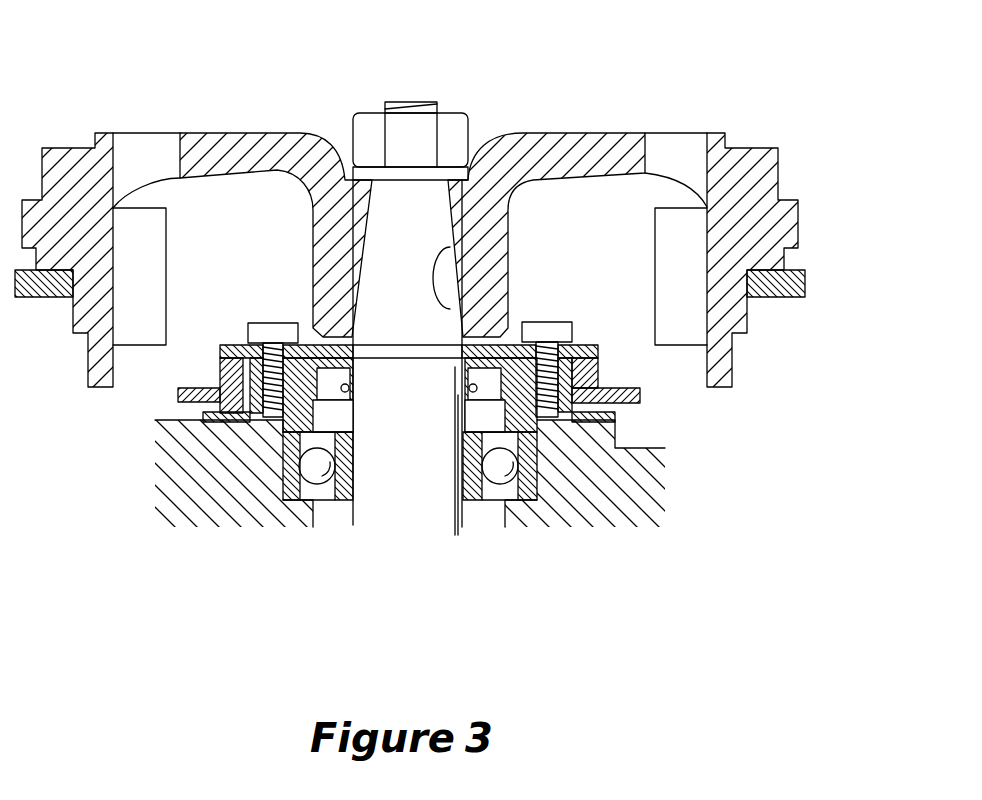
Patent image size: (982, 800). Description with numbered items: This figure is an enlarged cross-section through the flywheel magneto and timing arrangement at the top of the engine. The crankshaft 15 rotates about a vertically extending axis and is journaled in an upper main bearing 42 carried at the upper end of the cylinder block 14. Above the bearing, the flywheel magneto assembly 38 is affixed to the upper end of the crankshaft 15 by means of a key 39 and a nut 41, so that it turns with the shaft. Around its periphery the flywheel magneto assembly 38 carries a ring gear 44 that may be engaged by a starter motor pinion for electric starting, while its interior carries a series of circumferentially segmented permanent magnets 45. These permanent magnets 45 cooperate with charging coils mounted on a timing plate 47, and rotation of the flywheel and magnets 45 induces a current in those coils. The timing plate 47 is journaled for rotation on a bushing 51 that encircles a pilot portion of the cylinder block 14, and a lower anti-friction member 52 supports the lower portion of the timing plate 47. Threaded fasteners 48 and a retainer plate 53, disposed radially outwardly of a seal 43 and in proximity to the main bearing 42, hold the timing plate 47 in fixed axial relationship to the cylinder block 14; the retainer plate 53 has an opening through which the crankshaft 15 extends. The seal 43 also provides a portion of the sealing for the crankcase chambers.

The cylinder block 14 is at (647, 447).
The crankshaft 15 is at (428, 500).
The flywheel magneto assembly 38 is at (592, 134).
The key 39 is at (448, 273).
The nut 41 is at (457, 125).
The main bearing 42 is at (300, 503).
The seal 43 is at (353, 380).
The peripheral ring gear 44 is at (803, 298).
The permanent magnets 45 is at (145, 218).
The timing plate 47 is at (643, 397).
The threaded fasteners 48 is at (273, 323).
The bushing 51 is at (220, 363).
The lower anti-friction member 52 is at (208, 425).
The retainer plate 53 is at (583, 345).